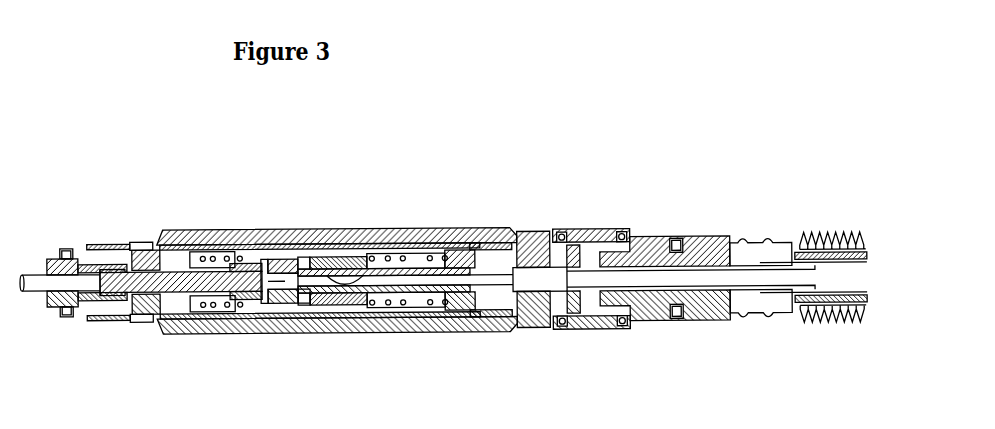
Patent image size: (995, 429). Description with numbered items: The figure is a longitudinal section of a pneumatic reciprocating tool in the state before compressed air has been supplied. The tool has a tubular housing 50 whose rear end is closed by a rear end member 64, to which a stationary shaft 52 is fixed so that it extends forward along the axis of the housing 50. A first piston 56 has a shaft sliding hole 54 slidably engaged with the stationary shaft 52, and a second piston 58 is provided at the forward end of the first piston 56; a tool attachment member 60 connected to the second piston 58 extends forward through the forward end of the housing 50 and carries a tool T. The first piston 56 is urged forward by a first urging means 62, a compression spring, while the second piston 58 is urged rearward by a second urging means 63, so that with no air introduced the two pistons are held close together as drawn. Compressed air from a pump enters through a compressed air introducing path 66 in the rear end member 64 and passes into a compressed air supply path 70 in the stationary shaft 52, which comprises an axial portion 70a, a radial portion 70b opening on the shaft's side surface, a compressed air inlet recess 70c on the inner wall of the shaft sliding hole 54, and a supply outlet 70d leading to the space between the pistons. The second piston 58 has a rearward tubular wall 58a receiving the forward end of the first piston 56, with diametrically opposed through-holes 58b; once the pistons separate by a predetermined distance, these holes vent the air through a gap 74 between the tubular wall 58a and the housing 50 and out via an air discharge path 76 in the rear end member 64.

The tool T is at (42, 284).
The tubular housing 50 is at (358, 232).
The stationary shaft 52 is at (446, 255).
The shaft sliding hole 54 is at (372, 265).
The first piston 56 is at (362, 258).
The second piston 58 is at (257, 256).
The tubular wall 58a is at (332, 272).
The through-holes 58b is at (292, 250).
The tool attachment member 60 is at (200, 252).
The first urging means 62 is at (470, 233).
The second urging means 63 is at (217, 247).
The rear end member 64 is at (533, 230).
The compressed air introducing path 66 is at (550, 285).
The compressed air supply path 70 is at (440, 283).
The axial portion 70a is at (323, 285).
The radial portion 70b is at (306, 292).
The compressed air inlet recess 70c is at (300, 256).
The supply outlet 70d is at (220, 303).
The gap 74 is at (286, 305).
The air discharge path 76 is at (613, 300).